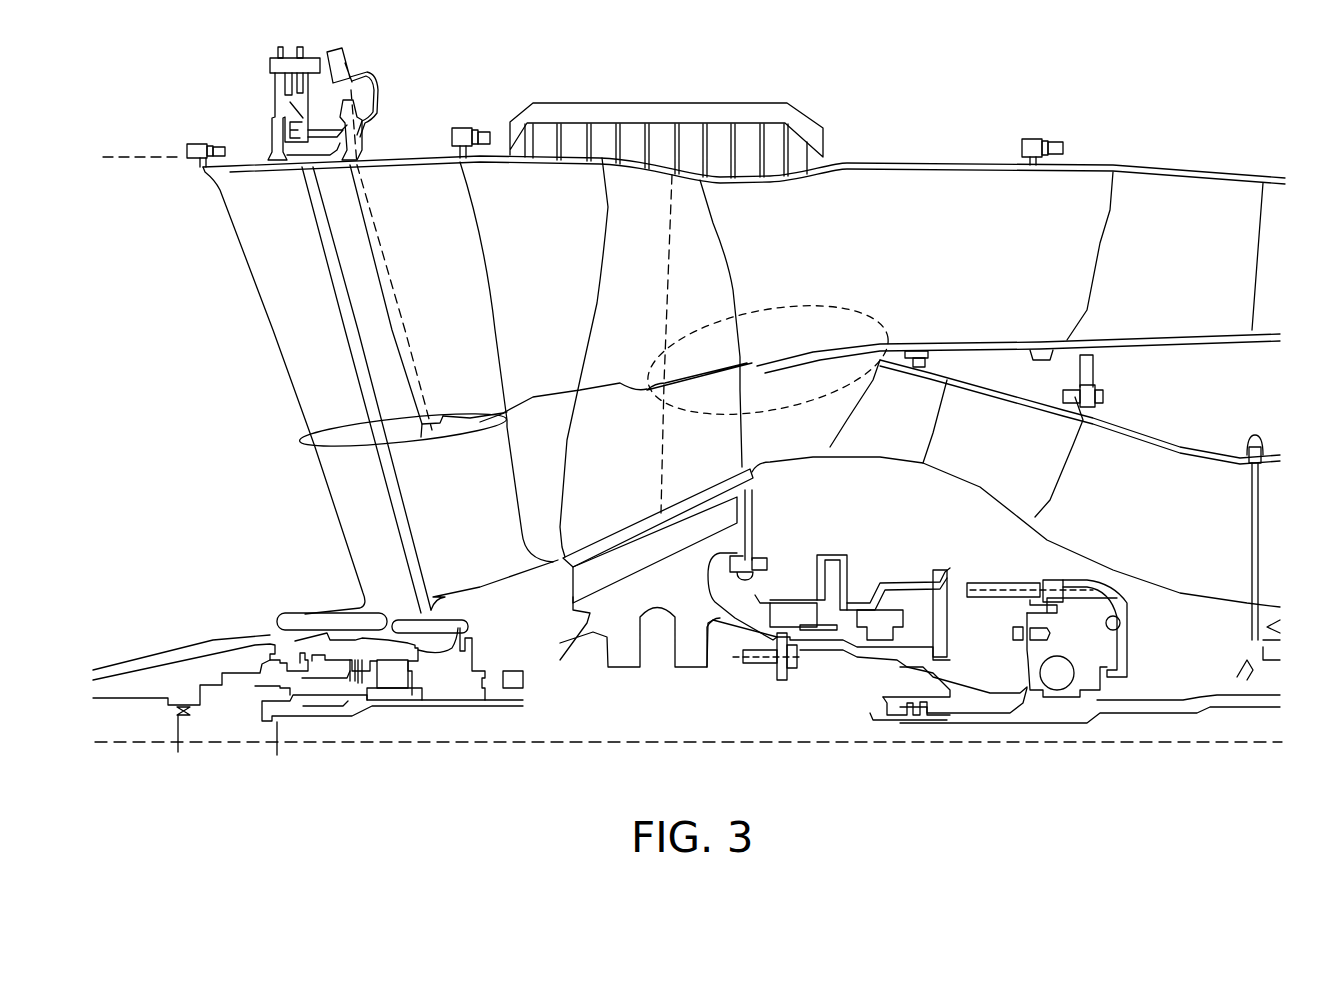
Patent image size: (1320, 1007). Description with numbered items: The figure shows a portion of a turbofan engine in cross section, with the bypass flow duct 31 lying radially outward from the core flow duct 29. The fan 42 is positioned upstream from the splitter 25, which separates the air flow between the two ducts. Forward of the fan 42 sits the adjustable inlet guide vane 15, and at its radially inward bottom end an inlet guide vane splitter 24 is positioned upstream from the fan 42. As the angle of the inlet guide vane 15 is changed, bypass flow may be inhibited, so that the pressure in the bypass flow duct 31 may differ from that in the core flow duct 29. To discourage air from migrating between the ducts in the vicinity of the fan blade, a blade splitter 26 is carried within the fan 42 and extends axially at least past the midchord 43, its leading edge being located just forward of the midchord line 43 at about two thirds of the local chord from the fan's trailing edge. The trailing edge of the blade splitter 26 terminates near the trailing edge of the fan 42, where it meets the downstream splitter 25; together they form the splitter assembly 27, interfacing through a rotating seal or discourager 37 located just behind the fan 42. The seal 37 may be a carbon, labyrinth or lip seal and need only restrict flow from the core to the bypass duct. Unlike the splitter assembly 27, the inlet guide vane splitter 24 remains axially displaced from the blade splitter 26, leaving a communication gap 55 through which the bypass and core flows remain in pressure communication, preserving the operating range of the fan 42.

The adjustable inlet guide vane 15 is at (467, 263).
The inlet guide vane splitter 24 is at (337, 447).
The splitter 25 is at (805, 355).
The blade splitter 26 is at (702, 380).
The splitter assembly 27 is at (813, 308).
The core flow duct 29 is at (956, 438).
The bypass flow duct 31 is at (1165, 256).
The seal or discourager 37 is at (763, 397).
The fan 42 is at (720, 282).
The midchord 43 is at (664, 280).
The communication gap 55 is at (580, 390).